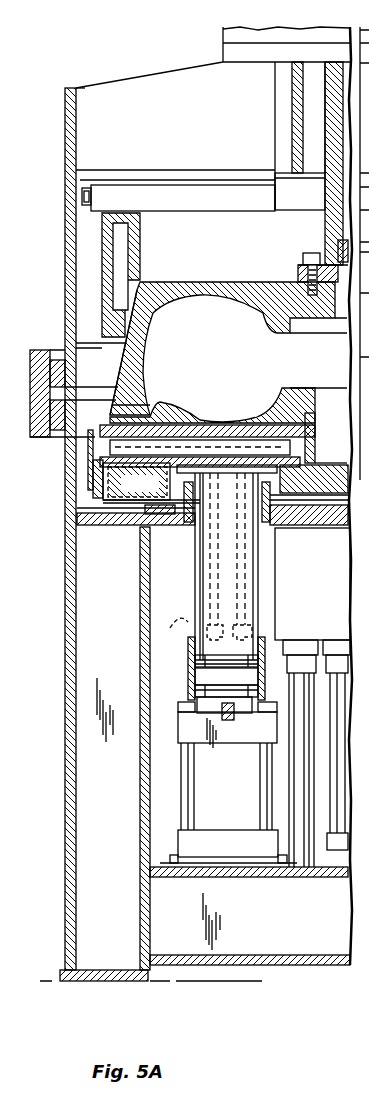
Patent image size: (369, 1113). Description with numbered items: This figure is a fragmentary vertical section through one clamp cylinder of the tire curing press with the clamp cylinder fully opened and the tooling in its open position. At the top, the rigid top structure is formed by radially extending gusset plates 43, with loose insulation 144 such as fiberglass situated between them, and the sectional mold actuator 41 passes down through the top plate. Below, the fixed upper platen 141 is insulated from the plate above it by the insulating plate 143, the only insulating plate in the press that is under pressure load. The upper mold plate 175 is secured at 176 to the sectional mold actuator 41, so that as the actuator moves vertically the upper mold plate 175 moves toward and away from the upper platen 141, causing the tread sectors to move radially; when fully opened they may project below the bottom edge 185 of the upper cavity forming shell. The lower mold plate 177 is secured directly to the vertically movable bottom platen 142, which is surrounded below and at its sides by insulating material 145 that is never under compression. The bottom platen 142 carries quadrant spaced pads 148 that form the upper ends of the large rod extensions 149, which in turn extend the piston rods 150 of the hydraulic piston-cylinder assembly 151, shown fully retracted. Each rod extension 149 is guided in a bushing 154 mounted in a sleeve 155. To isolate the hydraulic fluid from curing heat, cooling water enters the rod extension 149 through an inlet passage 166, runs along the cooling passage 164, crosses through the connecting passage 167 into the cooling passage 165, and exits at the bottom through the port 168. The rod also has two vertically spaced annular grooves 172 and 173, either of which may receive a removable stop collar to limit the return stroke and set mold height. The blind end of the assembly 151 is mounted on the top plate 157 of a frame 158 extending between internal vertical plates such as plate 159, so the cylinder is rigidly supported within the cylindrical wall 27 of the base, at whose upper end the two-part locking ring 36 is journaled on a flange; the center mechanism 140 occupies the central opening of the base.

The loose insulation 144 is at (126, 92).
The gusset plates 43 is at (163, 78).
The sectional mold actuator 41 is at (327, 110).
The insulating plate 143 is at (147, 183).
The upper platen 141 is at (148, 214).
The fastening connection 176 is at (309, 255).
The upper mold plate 175 is at (205, 281).
The center mechanism 140 is at (96, 325).
The two-part locking ring 36 is at (42, 351).
The bottom edge of upper cavity forming shell 185 is at (88, 391).
The lower mold plate 177 is at (207, 415).
The quadrant spaced pads 148 is at (293, 450).
The bottom platen 142 is at (92, 452).
The insulating material 145 is at (88, 490).
The connecting passage 167 is at (151, 488).
The bushing 154 is at (198, 530).
The cooling passage 164 is at (210, 576).
The rod extensions 149 is at (201, 597).
The inlet passage 166 is at (205, 630).
The sleeve 155 is at (272, 530).
The cooling passage 165 is at (242, 576).
The port 168 is at (252, 628).
The upper annular groove 172 is at (212, 663).
The lower annular groove 173 is at (212, 688).
The piston rod 150 is at (241, 705).
The hydraulic piston-cylinder assembly 151 is at (242, 785).
The cylindrical wall 27 is at (66, 692).
The internal vertical plate 159 is at (138, 817).
The top plate 157 is at (320, 876).
The frame 158 is at (314, 950).